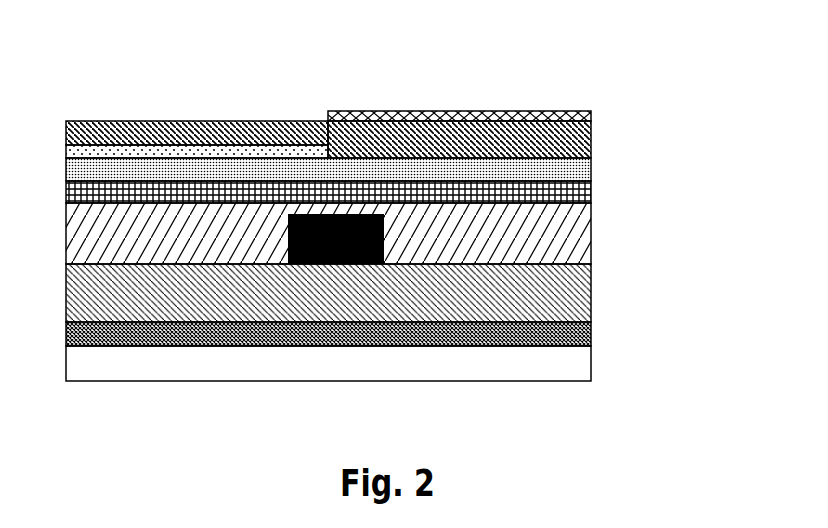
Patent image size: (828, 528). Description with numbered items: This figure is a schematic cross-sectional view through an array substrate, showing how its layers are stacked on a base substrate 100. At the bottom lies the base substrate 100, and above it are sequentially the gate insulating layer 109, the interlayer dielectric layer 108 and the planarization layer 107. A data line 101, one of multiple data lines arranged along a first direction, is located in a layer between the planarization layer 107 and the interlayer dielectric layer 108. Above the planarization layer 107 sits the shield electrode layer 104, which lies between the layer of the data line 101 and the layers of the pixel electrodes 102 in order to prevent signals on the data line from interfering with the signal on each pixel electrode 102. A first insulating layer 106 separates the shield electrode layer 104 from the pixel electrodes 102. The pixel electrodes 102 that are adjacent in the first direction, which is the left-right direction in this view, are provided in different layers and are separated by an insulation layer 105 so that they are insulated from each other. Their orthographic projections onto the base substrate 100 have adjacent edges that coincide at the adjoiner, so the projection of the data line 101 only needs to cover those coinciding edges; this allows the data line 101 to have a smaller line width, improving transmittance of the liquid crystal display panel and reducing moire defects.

The base substrate 100 is at (583, 356).
The data line 101 is at (328, 256).
The pixel electrode 102 is at (328, 83).
The shield electrode layer 104 is at (583, 184).
The insulation layer 105 is at (583, 137).
The first insulating layer 106 is at (583, 161).
The planarization layer 107 is at (583, 226).
The interlayer dielectric layer 108 is at (583, 285).
The gate insulating layer 109 is at (583, 327).